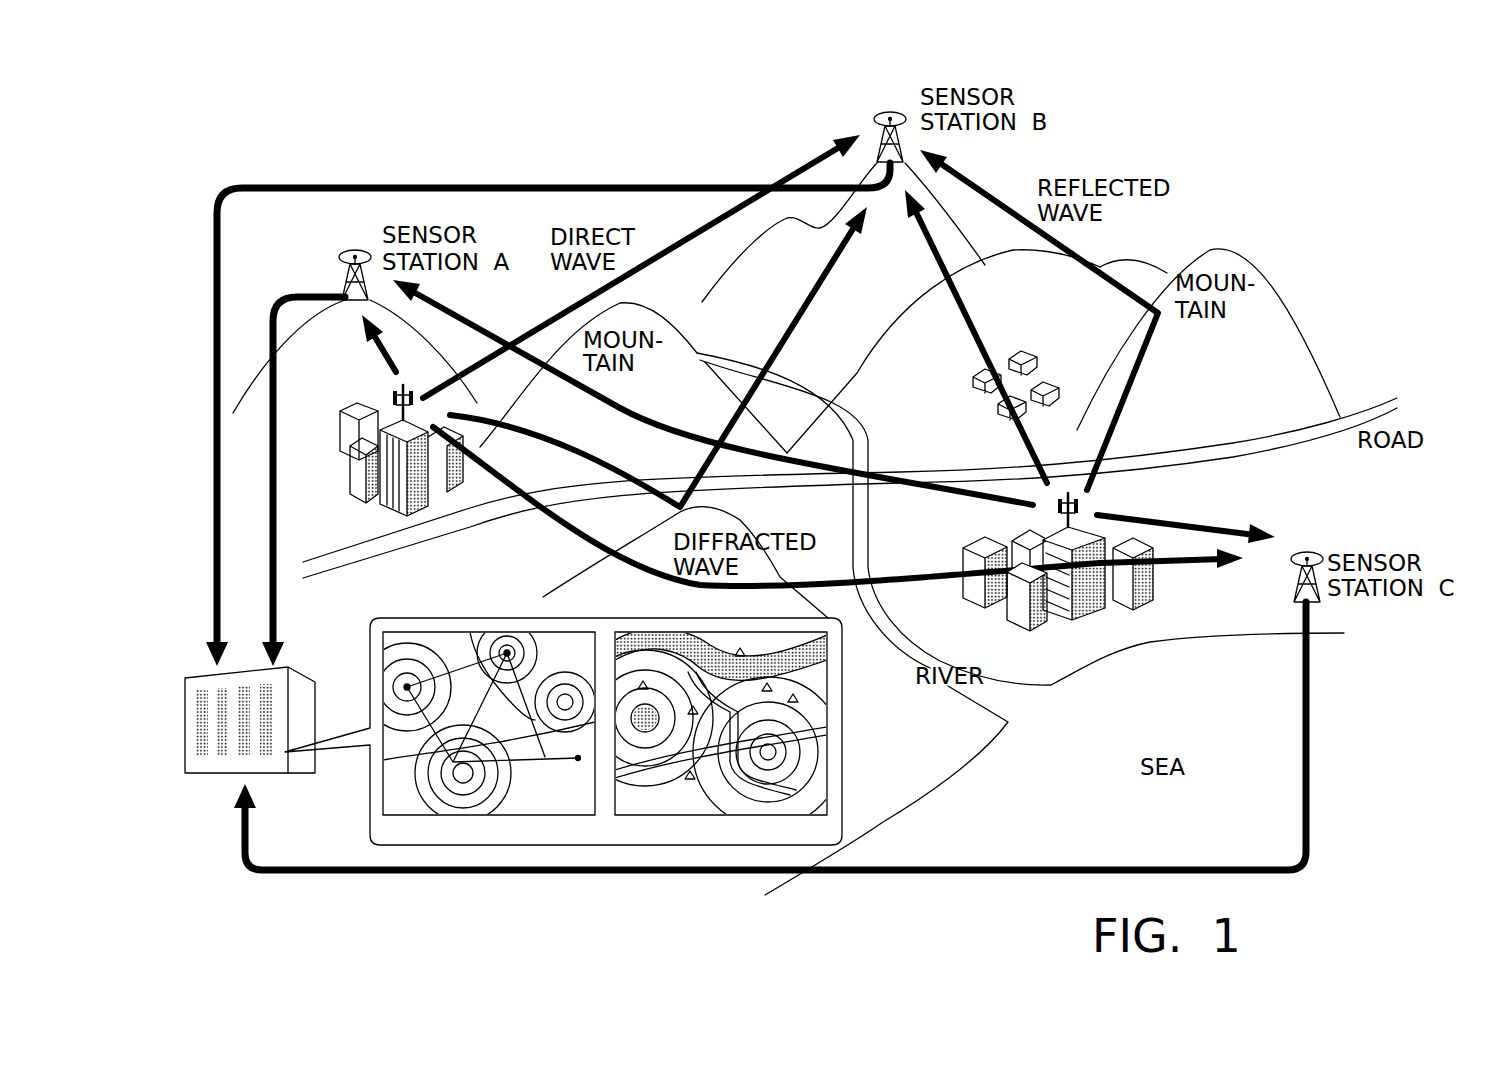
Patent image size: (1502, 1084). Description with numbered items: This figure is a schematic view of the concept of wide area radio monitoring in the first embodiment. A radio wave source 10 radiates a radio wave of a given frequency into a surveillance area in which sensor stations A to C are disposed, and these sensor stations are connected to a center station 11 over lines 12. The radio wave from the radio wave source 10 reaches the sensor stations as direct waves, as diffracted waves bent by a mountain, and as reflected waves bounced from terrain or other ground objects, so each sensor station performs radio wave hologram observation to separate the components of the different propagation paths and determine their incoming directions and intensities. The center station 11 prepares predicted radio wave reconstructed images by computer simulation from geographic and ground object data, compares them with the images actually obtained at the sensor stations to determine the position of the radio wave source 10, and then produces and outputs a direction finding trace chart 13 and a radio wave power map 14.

The radio wave source 10 is at (383, 403).
The center station 11 is at (222, 770).
The lines 12 is at (575, 183).
The direction finding trace chart 13 is at (461, 830).
The radio wave power map 14 is at (704, 830).